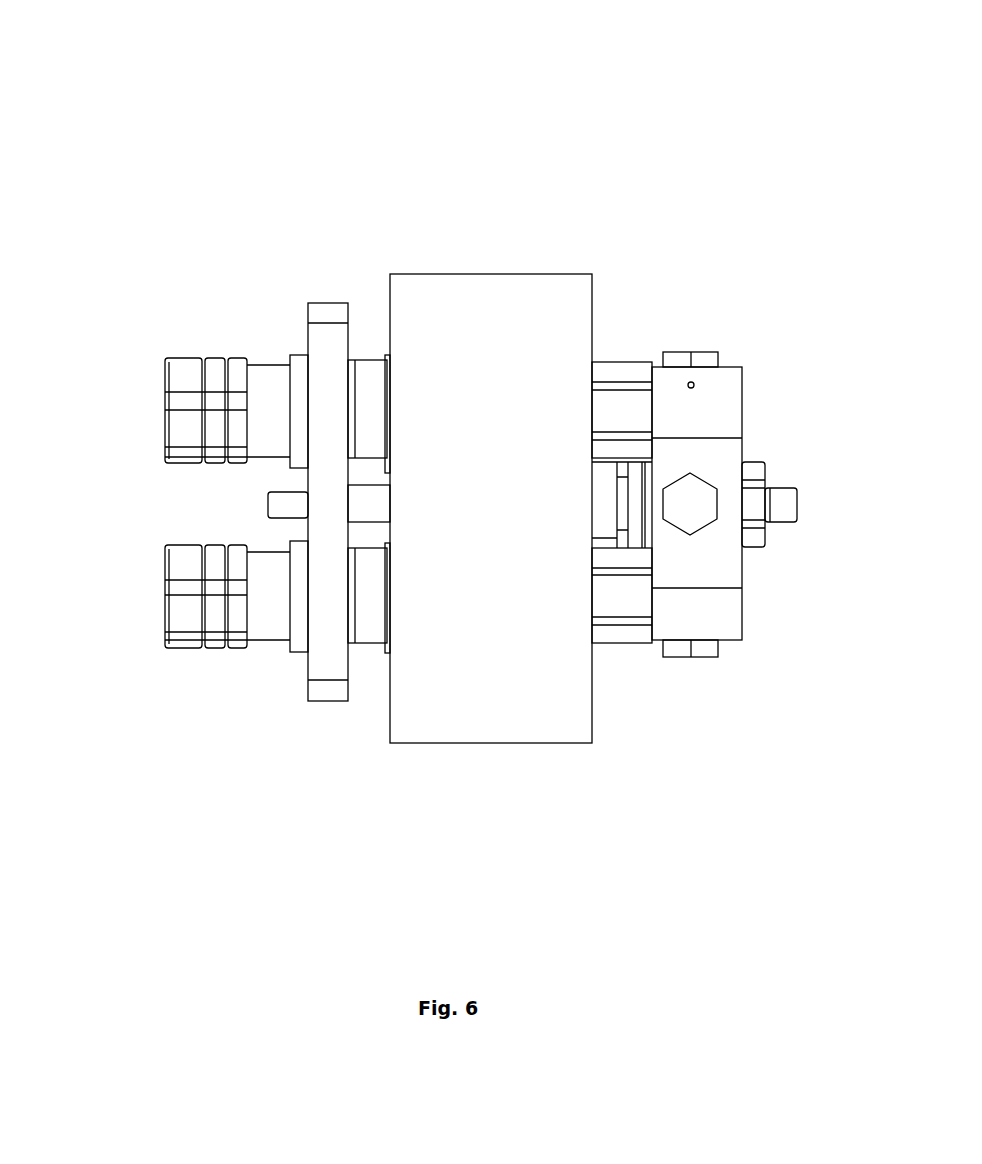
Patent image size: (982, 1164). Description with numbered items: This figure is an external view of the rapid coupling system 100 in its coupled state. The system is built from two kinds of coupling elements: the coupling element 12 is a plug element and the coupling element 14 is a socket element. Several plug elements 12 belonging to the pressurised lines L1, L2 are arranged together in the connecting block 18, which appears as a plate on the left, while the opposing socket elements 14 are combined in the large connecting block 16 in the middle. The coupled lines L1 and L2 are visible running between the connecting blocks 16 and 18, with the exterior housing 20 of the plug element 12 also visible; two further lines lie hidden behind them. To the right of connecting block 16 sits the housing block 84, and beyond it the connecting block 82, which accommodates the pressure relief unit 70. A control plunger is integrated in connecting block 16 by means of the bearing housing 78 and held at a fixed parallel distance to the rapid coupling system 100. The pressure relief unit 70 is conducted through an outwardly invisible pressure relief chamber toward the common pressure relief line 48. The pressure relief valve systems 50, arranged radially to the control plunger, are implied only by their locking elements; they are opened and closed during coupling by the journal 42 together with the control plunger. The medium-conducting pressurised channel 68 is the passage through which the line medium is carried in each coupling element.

The rapid coupling system 100 is at (300, 109).
The coupling element 12 is at (183, 255).
The coupling element 14 is at (624, 224).
The connecting block 16 is at (555, 728).
The connecting block 18 is at (332, 690).
The exterior housing 20 is at (372, 640).
The journal 42 is at (368, 503).
The common pressure relief line 48 is at (798, 507).
The pressure relief valve systems 50 is at (692, 335).
The pressurised channel 68 is at (177, 403).
The pressure relief unit 70 is at (762, 673).
The bearing housing 78 is at (600, 523).
The connecting block 82 is at (723, 412).
The housing block 84 is at (628, 367).
The pressurised line L1 is at (131, 410).
The pressurised line L2 is at (153, 598).